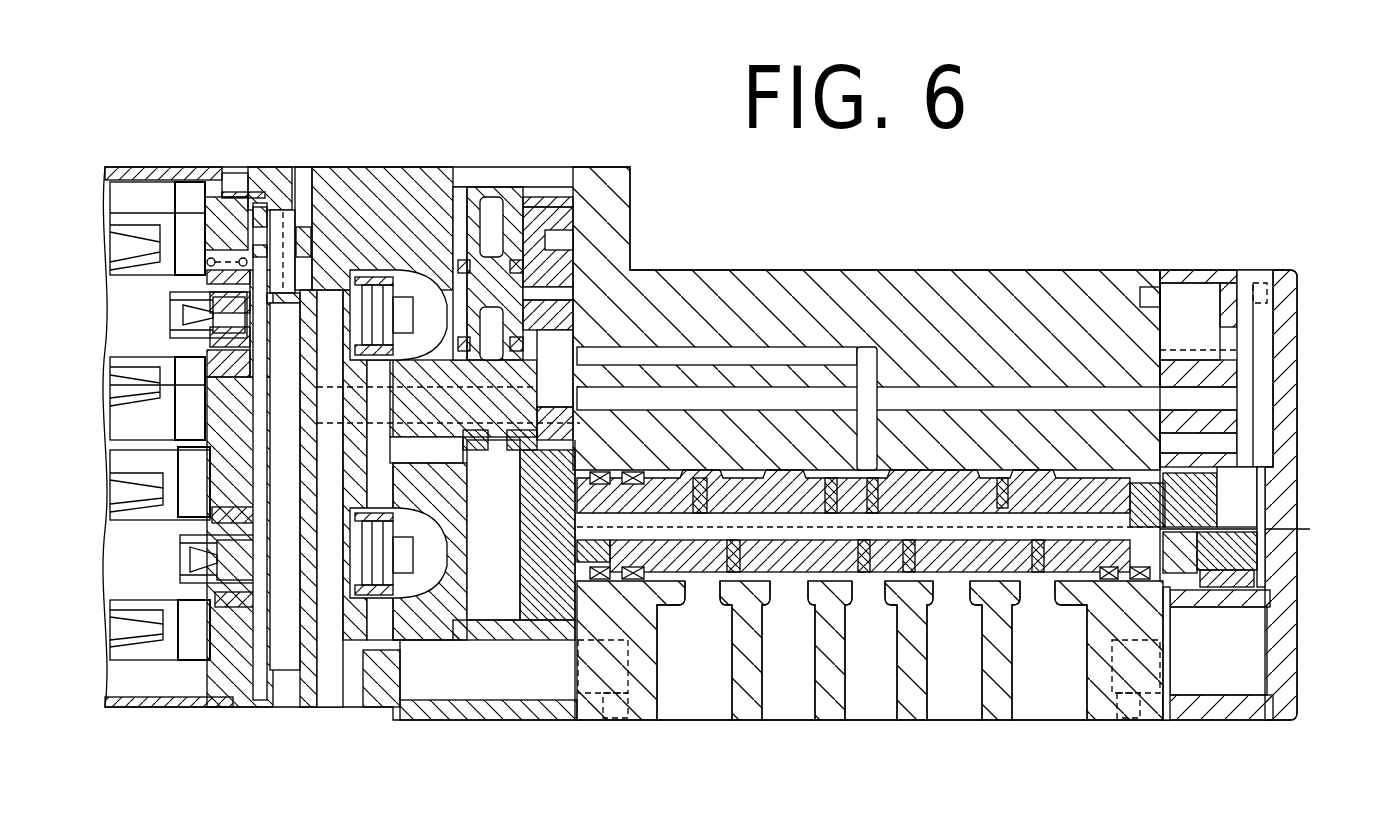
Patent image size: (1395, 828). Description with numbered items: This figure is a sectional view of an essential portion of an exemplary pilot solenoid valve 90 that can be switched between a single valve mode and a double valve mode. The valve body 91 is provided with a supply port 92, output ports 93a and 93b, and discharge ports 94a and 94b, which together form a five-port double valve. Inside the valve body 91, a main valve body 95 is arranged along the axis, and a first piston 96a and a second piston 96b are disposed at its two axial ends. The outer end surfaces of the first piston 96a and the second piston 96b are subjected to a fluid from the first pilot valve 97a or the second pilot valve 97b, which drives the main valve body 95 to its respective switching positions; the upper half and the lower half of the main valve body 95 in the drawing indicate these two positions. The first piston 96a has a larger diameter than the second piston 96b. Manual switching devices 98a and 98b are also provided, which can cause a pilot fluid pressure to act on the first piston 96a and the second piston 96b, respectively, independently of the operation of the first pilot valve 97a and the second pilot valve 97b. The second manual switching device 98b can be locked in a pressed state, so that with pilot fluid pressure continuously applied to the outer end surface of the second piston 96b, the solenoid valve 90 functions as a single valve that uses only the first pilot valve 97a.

The pilot solenoid valve 90 is at (1232, 228).
The valve body 91 is at (1010, 300).
The supply port 92 is at (872, 692).
The output port 93a is at (783, 690).
The output port 93b is at (953, 688).
The discharge port 94a is at (690, 690).
The discharge port 94b is at (1045, 690).
The main valve body 95 is at (788, 505).
The first piston 96a is at (537, 590).
The second piston 96b is at (1240, 560).
The first pilot valve 97a is at (163, 167).
The second pilot valve 97b is at (180, 707).
The manual switching device 98a is at (283, 160).
The second manual switching device 98b is at (483, 167).